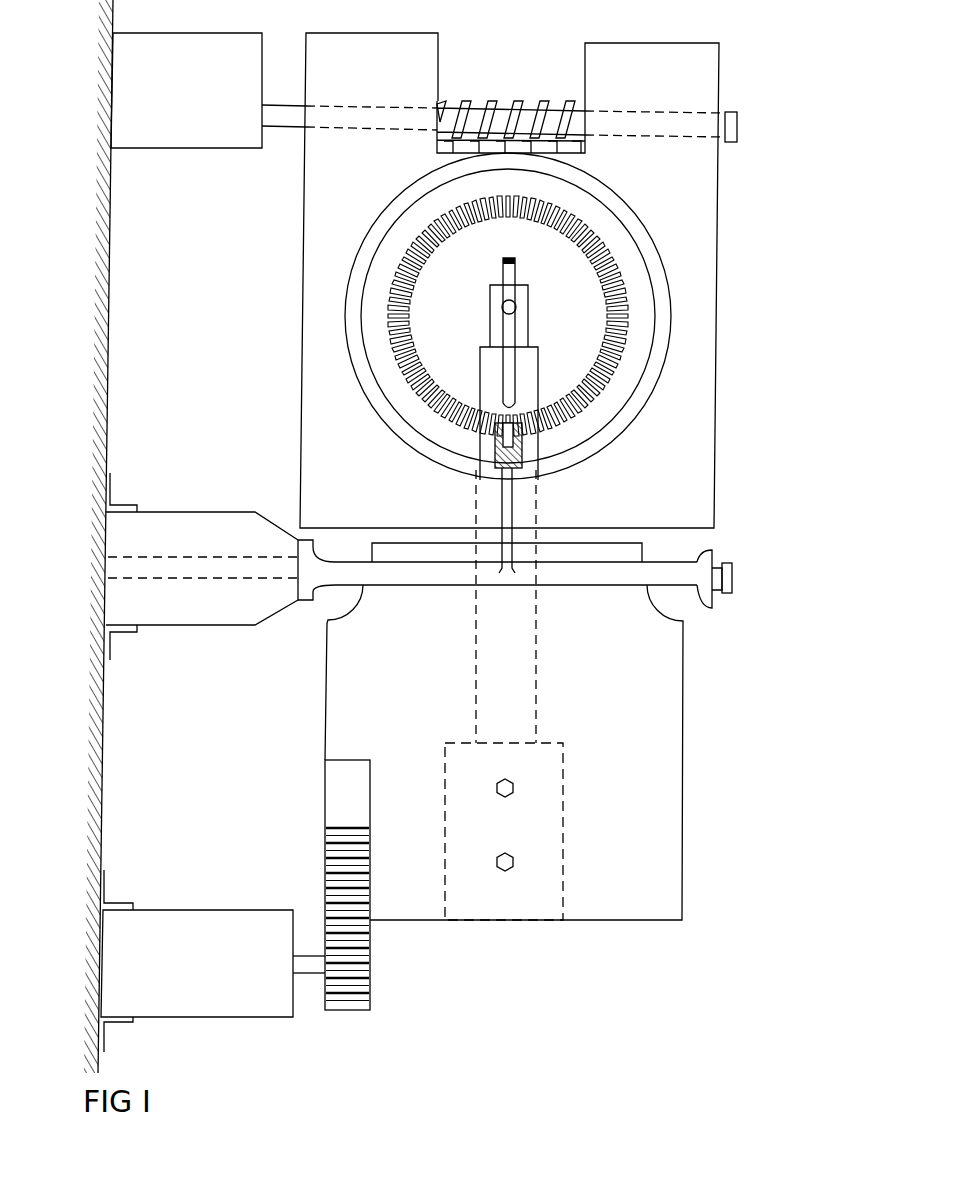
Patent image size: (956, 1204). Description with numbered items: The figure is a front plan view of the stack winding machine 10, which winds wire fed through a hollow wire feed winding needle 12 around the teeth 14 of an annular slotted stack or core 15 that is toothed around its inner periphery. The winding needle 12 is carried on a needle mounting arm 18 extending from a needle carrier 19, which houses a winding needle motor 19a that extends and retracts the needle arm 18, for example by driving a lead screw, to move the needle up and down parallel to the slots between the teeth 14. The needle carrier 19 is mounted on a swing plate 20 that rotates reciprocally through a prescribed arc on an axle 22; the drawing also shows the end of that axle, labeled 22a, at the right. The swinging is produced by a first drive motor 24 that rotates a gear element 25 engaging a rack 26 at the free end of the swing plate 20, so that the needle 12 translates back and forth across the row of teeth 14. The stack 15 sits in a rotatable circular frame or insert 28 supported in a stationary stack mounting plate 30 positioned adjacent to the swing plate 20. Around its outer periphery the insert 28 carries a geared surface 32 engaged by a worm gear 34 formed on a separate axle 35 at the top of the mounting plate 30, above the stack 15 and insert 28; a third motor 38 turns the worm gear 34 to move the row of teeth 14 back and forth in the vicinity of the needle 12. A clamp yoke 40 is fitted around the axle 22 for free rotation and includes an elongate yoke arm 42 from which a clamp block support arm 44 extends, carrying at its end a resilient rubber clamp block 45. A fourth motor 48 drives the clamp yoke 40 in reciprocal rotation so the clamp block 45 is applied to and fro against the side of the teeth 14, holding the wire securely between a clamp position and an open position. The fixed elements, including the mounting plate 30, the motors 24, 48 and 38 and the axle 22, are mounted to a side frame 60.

The stack winding machine 10 is at (548, 992).
The hollow wire feed winding needle 12 is at (503, 270).
The teeth 14 is at (622, 300).
The slotted stack or core 15 is at (612, 237).
The needle mounting arm 18 is at (478, 363).
The needle carrier 19 is at (455, 742).
The winding needle motor 19a is at (546, 902).
The swing plate 20 is at (623, 876).
The axle 22 is at (486, 600).
The shaft end cap 22a is at (727, 594).
The first drive motor 24 is at (204, 910).
The gear element 25 is at (372, 975).
The rack 26 is at (328, 838).
The circular frame or insert 28 is at (648, 258).
The stack mounting plate 30 is at (358, 172).
The geared surface 32 is at (578, 153).
The worm gear 34 is at (535, 121).
The separate axle 35 is at (290, 105).
The third motor 38 is at (207, 149).
The clamp yoke 40 is at (433, 588).
The yoke arm 42 is at (598, 587).
The clamp block support arm 44 is at (506, 523).
The clamp block 45 is at (522, 462).
The fourth motor 48 is at (214, 512).
The side frame 60 is at (112, 326).